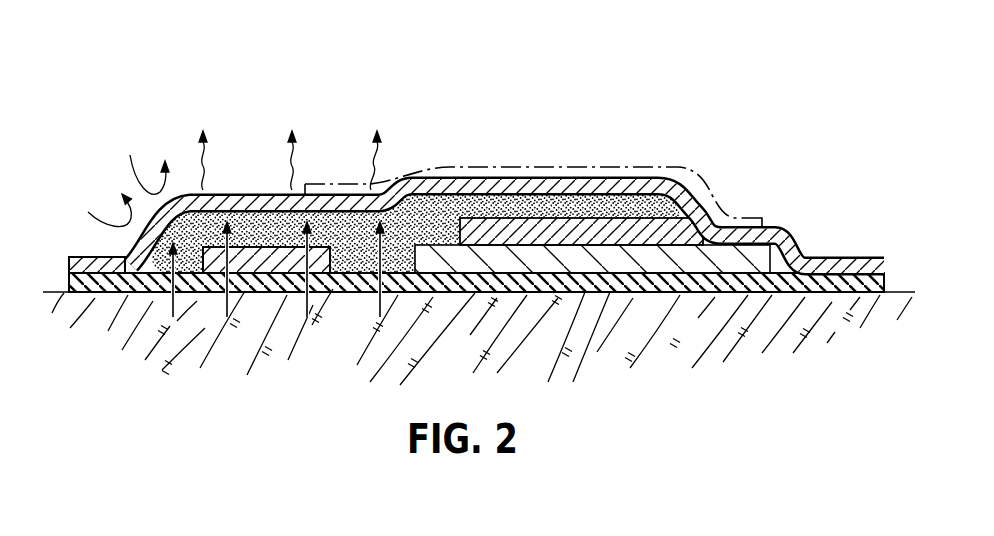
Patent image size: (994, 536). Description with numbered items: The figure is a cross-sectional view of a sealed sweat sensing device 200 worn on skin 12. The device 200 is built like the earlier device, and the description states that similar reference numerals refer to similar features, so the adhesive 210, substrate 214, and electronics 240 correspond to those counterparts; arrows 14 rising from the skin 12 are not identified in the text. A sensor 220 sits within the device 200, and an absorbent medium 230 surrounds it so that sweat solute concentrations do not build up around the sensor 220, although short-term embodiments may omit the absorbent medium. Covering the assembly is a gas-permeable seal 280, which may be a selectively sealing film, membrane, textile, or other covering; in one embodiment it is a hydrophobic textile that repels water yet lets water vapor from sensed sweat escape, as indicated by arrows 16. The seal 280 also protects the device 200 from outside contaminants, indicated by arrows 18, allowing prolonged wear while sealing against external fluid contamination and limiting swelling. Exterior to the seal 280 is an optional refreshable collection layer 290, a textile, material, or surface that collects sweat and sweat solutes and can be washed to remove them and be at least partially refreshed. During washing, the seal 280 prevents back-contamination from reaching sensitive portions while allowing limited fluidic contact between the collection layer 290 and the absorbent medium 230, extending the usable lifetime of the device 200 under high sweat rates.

The device 200 is at (93, 88).
The skin 12 is at (592, 348).
The fluid flow from tissue 14 is at (173, 300).
The arrows 16 is at (288, 153).
The arrows 18 is at (100, 217).
The base substrate layer 210 is at (843, 276).
The conductive trace layer 214 is at (723, 253).
The sensor 220 is at (263, 262).
The absorbent medium 230 is at (407, 220).
The heating element 240 is at (678, 220).
The gas-permeable seal 280 is at (503, 178).
The refreshable collection layer 290 is at (590, 167).